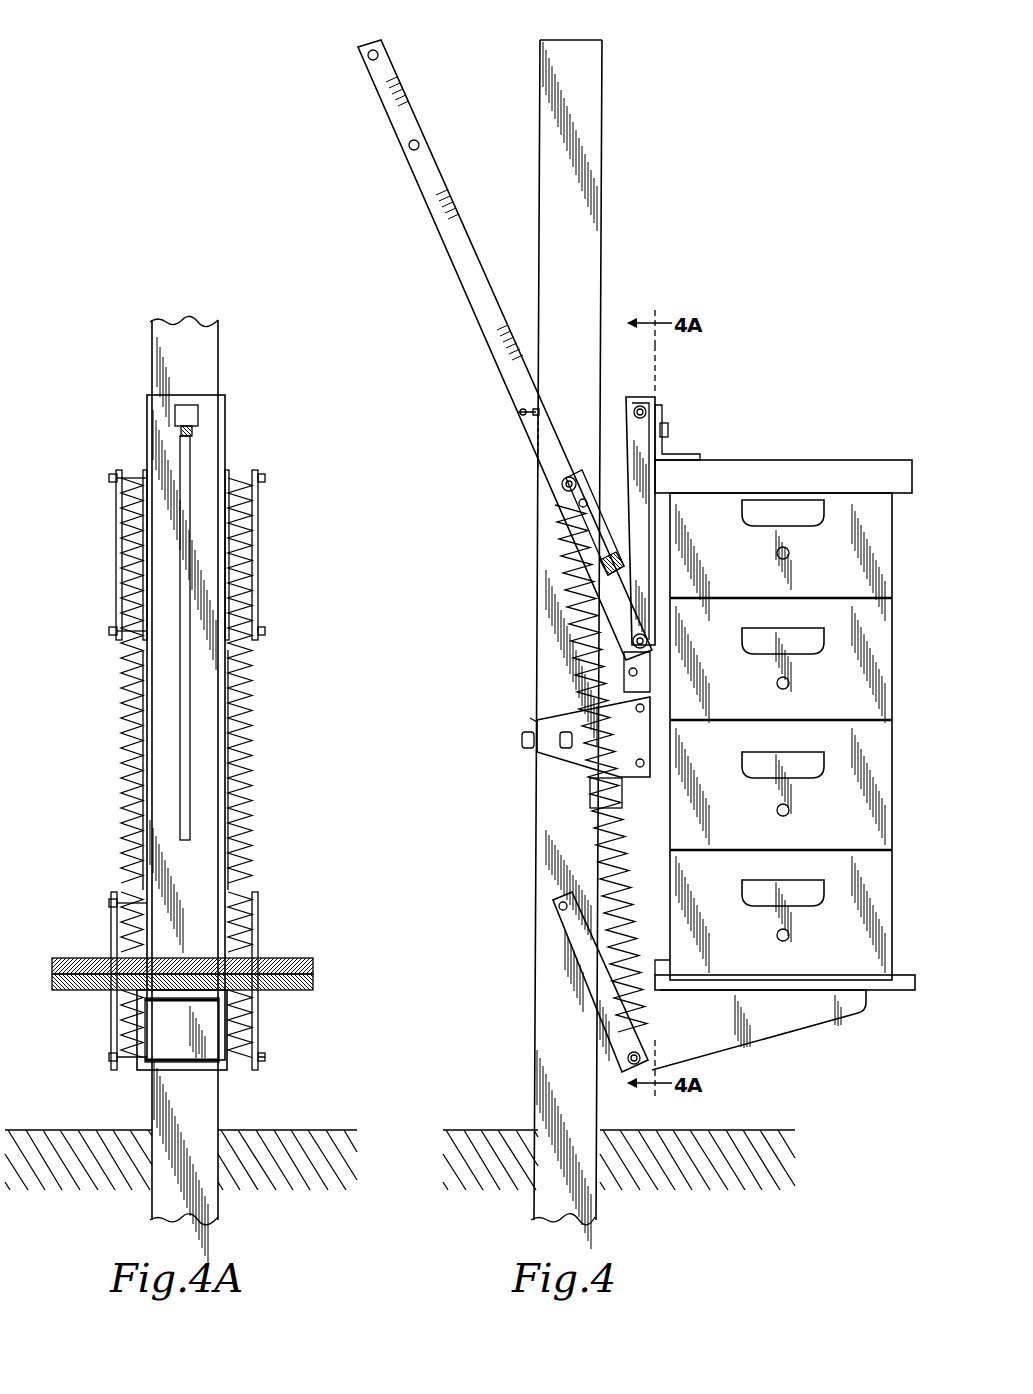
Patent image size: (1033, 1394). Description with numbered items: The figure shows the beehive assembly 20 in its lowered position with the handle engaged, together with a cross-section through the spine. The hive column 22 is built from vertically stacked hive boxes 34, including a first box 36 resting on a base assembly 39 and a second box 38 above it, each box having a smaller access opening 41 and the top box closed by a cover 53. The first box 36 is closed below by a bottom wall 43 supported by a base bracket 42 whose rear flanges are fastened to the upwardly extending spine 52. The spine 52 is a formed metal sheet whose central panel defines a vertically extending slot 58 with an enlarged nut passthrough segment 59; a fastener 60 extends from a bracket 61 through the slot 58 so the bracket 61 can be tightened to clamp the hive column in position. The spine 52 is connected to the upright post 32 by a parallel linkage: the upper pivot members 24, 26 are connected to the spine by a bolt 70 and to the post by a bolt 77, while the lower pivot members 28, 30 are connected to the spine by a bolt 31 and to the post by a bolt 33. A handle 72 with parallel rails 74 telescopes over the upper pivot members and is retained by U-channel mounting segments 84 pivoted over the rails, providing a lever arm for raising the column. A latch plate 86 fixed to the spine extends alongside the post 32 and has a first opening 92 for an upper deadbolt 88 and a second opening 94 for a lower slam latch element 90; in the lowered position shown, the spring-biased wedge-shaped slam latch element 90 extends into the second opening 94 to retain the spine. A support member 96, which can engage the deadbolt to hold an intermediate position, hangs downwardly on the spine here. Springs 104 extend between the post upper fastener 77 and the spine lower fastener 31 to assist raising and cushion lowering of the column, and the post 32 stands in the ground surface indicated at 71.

In FIG. 4A, the beehive assembly 20 is at (290, 519).
In FIG. 4, the beehive assembly 20 is at (478, 86).
In FIG. 4, the hive column 22 is at (894, 562).
In FIG. 4A, the first upper pivot member 24 is at (118, 561).
In FIG. 4A, the second upper pivot member 26 is at (257, 563).
In FIG. 4A, the first lower pivot member 28 is at (112, 923).
In FIG. 4A, the second lower pivot member 30 is at (258, 930).
In FIG. 4A, the bolt 31 is at (108, 1057).
In FIG. 4, the bolt 31 is at (622, 1058).
In FIG. 4A, the upright post 32 is at (214, 356).
In FIG. 4, the upright post 32 is at (596, 262).
In FIG. 4A, the bolt 33 is at (110, 903).
In FIG. 4, the hive boxes 34 is at (895, 747).
In FIG. 4, the first box 36 is at (895, 882).
In FIG. 4, the second box 38 is at (895, 802).
In FIG. 4A, the base assembly 39 is at (298, 990).
In FIG. 4, the access opening 41 is at (776, 555).
In FIG. 4A, the base bracket 42 is at (193, 1072).
In FIG. 4, the base bracket 42 is at (738, 1051).
In FIG. 4, the bottom wall 43 is at (884, 990).
In FIG. 4, the spine 52 is at (640, 397).
In FIG. 4, the cover 53 is at (790, 460).
In FIG. 4A, the slot 58 is at (190, 790).
In FIG. 4A, the nut passthrough segment 59 is at (199, 419).
In FIG. 4A, the fastener 60 is at (192, 434).
In FIG. 4, the fastener 60 is at (668, 430).
In FIG. 4, the bracket 61 is at (690, 455).
In FIG. 4A, the bolt 70 is at (112, 631).
In FIG. 4, the bolt 70 is at (632, 641).
In FIG. 4A, the ground 71 is at (296, 1130).
In FIG. 4, the ground 71 is at (478, 1130).
In FIG. 4, the handle 72 is at (480, 248).
In FIG. 4, the parallel rail 74 is at (428, 181).
In FIG. 4A, the bolt 77 is at (110, 478).
In FIG. 4, the U-channel mounting segment 84 is at (590, 528).
In FIG. 4, the latch plate 86 is at (575, 755).
In FIG. 4, the deadbolt 88 is at (518, 412).
In FIG. 4, the slam latch element 90 is at (522, 740).
In FIG. 4, the first opening 92 is at (564, 751).
In FIG. 4, the second opening 94 is at (526, 719).
In FIG. 4, the support member 96 is at (627, 510).
In FIG. 4A, the springs 104 is at (120, 741).
In FIG. 4, the springs 104 is at (582, 677).